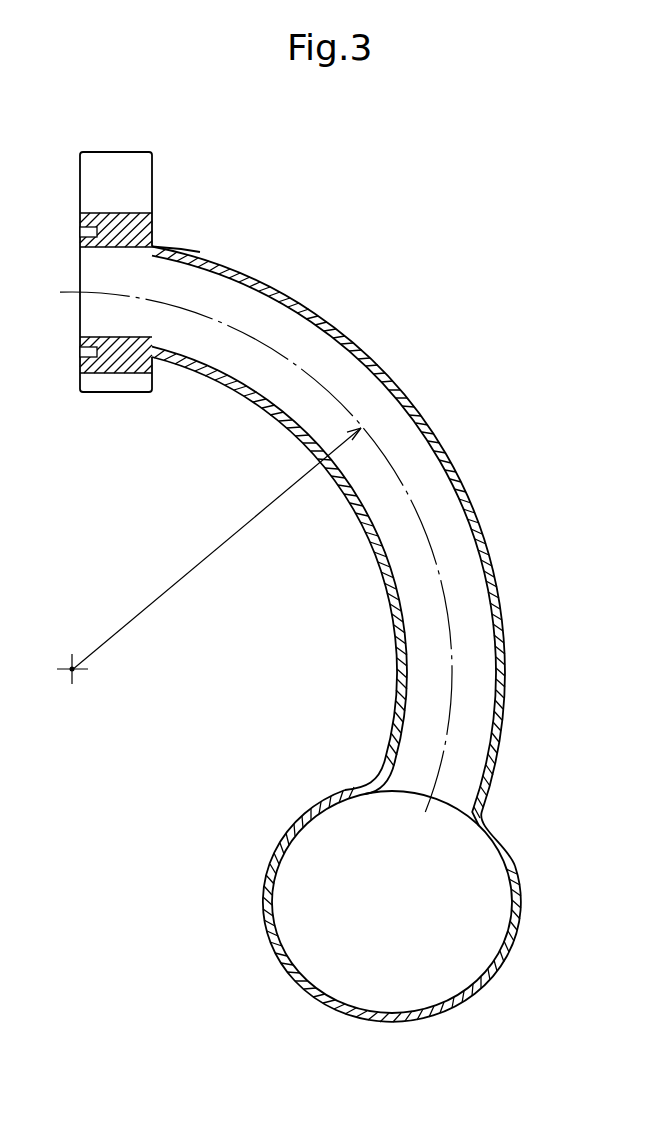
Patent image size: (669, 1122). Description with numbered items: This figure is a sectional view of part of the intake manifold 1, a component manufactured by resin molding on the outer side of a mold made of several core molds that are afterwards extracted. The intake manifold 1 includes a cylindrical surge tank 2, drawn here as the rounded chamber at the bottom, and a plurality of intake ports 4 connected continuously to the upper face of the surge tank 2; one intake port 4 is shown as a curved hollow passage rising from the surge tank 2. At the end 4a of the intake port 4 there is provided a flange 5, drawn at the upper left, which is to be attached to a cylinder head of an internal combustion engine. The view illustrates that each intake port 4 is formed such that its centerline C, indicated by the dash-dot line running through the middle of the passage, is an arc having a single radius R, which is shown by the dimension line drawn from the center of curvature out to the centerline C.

The intake manifold 1 is at (502, 278).
The surge tank 2 is at (522, 895).
The intake port 4 is at (472, 498).
The end of the intake port 4a is at (160, 246).
The flange 5 is at (115, 152).
The radius R is at (209, 556).
The centerline C is at (400, 617).